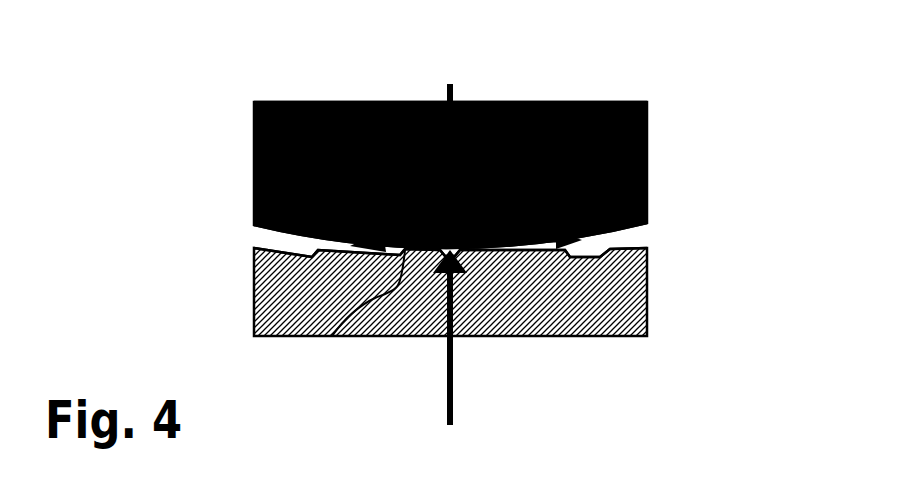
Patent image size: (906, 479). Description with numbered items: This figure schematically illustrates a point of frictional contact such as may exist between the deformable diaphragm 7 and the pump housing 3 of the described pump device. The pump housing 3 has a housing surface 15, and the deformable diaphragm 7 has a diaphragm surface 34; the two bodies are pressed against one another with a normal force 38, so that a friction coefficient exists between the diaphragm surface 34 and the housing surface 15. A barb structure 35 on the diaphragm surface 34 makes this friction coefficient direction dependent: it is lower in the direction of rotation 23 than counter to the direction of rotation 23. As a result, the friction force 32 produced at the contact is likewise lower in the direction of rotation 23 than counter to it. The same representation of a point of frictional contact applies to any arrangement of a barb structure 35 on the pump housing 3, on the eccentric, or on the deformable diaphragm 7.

The pump housing 3 is at (647, 285).
The deformable diaphragm 7 is at (647, 143).
The housing surface 15 is at (275, 246).
The direction of rotation 23 is at (385, 102).
The friction force 32 is at (580, 102).
The diaphragm surface 34 is at (292, 235).
The barb structure 35 is at (622, 245).
The normal force 38 is at (453, 92).